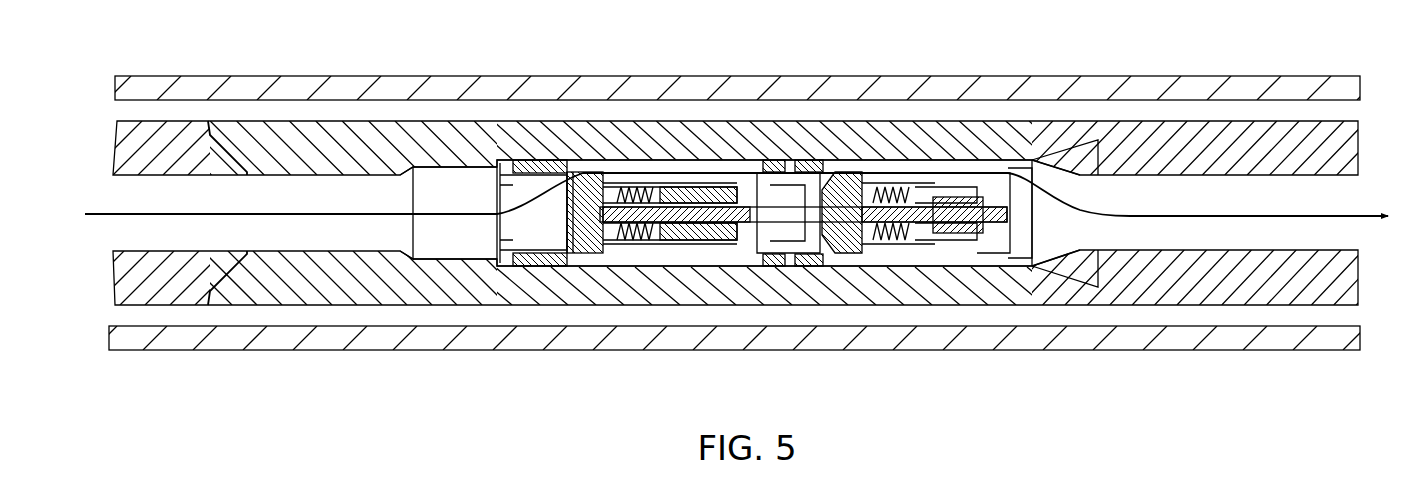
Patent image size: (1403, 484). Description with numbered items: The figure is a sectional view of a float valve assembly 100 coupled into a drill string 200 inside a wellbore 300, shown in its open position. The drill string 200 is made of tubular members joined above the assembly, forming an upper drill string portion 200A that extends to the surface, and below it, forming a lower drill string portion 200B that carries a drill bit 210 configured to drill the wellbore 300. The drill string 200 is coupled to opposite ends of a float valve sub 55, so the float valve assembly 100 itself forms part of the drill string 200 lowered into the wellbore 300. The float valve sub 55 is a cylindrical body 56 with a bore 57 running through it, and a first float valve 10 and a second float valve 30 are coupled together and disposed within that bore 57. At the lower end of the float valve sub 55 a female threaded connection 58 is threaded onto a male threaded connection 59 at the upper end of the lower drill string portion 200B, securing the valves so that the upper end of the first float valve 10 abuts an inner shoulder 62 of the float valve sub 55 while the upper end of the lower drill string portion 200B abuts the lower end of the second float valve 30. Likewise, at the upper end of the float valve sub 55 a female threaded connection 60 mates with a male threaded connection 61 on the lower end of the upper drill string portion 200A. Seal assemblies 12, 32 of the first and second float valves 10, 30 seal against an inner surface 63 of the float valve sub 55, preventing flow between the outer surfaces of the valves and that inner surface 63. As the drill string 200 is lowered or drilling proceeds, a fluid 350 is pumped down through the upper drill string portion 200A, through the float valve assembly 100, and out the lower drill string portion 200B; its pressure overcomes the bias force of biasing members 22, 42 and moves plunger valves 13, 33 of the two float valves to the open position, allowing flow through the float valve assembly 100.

The upper drill string portion 200A is at (148, 152).
The lower drill string portion 200B is at (1240, 145).
The wellbore 300 is at (240, 75).
The drill string 200 is at (139, 316).
The drill bit 210 is at (1356, 282).
The float valve assembly 100 is at (943, 121).
The float valve sub 55 is at (600, 150).
The cylindrical body 56 is at (443, 143).
The bore 57 is at (337, 207).
The female threaded connection 58 is at (1068, 140).
The male threaded connection 59 is at (1065, 162).
The female threaded connection 60 is at (228, 292).
The male threaded connection 61 is at (225, 273).
The inner shoulder 62 is at (493, 260).
The inner surface 63 is at (752, 157).
The seal assembly 12 is at (529, 156).
The plunger valve 13 is at (578, 250).
The first float valve 10 is at (637, 268).
The biasing member 22 is at (643, 238).
The seal assembly 32 is at (786, 143).
The plunger valve 33 is at (838, 242).
The second float valve 30 is at (893, 258).
The biasing member 42 is at (902, 236).
The fluid 350 is at (1225, 217).